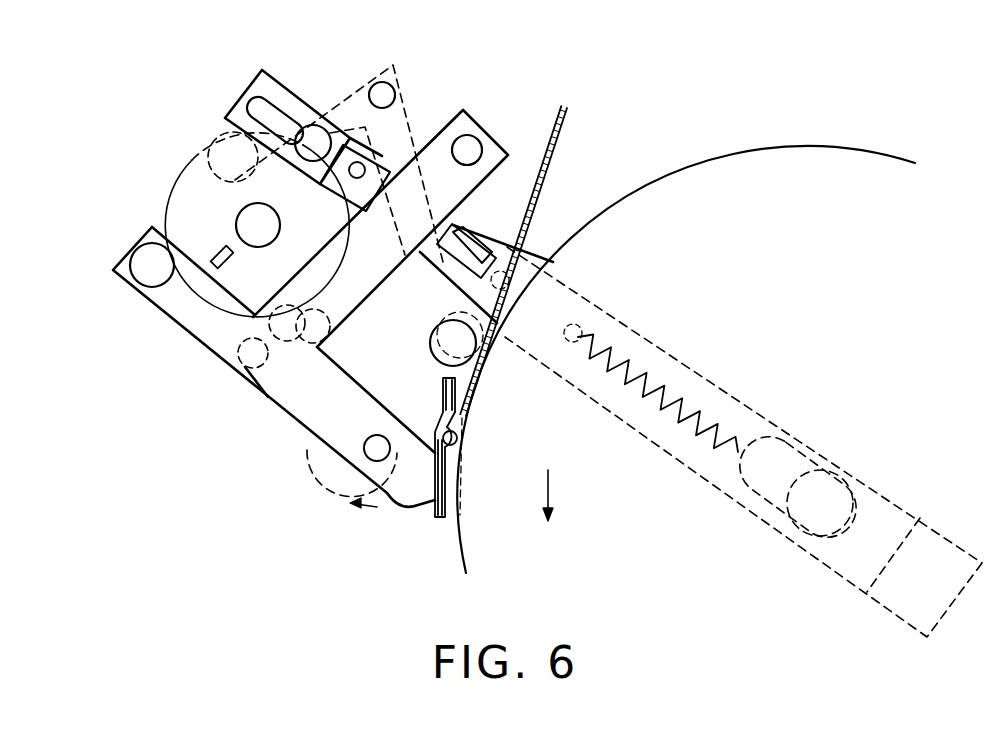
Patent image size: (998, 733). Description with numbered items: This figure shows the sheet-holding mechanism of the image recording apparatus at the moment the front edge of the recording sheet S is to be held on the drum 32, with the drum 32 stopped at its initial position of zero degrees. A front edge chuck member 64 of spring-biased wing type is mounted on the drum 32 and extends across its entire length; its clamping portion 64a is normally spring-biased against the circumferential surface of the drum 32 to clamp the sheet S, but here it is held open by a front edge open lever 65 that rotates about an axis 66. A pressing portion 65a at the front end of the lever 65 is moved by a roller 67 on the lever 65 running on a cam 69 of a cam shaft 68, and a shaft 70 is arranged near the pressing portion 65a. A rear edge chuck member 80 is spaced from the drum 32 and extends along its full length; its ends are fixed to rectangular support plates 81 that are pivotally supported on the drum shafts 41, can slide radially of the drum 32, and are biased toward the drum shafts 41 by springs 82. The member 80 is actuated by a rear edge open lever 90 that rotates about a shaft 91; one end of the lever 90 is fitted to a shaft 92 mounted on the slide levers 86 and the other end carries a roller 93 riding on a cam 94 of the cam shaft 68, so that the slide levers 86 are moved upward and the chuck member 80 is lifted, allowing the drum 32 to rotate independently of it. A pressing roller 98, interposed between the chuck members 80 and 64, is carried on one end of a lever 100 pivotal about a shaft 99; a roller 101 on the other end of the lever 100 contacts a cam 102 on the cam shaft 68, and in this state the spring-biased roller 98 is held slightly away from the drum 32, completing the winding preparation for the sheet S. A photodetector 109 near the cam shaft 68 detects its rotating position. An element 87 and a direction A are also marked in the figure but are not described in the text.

The drum 32 is at (686, 327).
The recording sheet S is at (531, 310).
The rectangular support plate 81 is at (743, 442).
The spring 82 is at (651, 377).
The drum shaft 41 is at (812, 478).
The slide lever 86 is at (303, 97).
The pin 87 is at (326, 94).
The lever 100 is at (339, 131).
The shaft 99 is at (415, 71).
The shaft 92 is at (386, 148).
The axis 66 is at (488, 119).
The front edge open lever 65 is at (403, 281).
The rear edge chuck member 80 is at (484, 229).
The pressing roller 98 is at (447, 331).
The rear edge open lever 90 is at (206, 324).
The pressing portion 65a is at (367, 491).
The roller 93 is at (129, 285).
The photodetector 109 is at (171, 304).
The cam shaft 68 is at (185, 220).
The cam 69 is at (190, 220).
The cam 94 is at (257, 225).
The cam 102 is at (257, 225).
The roller 101 is at (219, 124).
The roller 67 is at (281, 387).
The shaft 91 is at (231, 383).
The shaft 70 is at (329, 481).
The clamping portion 64a is at (501, 400).
The front edge chuck member 64 is at (432, 499).
The direction arrow A is at (559, 495).